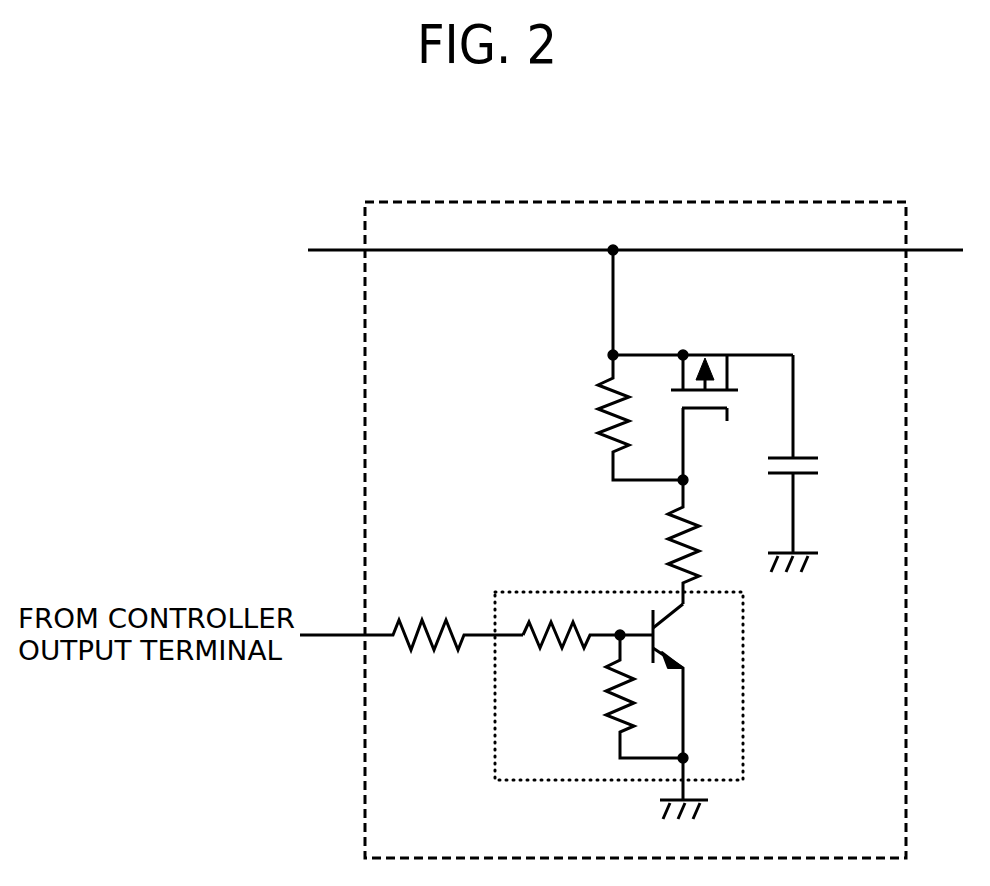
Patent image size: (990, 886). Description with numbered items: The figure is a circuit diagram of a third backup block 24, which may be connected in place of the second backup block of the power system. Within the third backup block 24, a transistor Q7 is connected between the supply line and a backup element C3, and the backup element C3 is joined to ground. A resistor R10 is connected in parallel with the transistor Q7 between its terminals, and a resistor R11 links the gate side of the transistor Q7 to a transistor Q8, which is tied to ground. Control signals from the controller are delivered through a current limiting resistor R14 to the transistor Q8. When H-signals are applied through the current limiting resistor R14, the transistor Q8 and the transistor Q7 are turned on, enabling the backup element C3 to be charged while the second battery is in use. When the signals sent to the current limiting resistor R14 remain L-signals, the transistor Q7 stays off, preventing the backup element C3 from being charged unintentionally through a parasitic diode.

The third backup block 24 is at (636, 168).
The transistor Q7 is at (684, 400).
The resistor R10 is at (614, 417).
The resistor R11 is at (654, 542).
The backup element C3 is at (814, 463).
The current limiting resistor R14 is at (411, 618).
The transistor Q8 is at (619, 688).